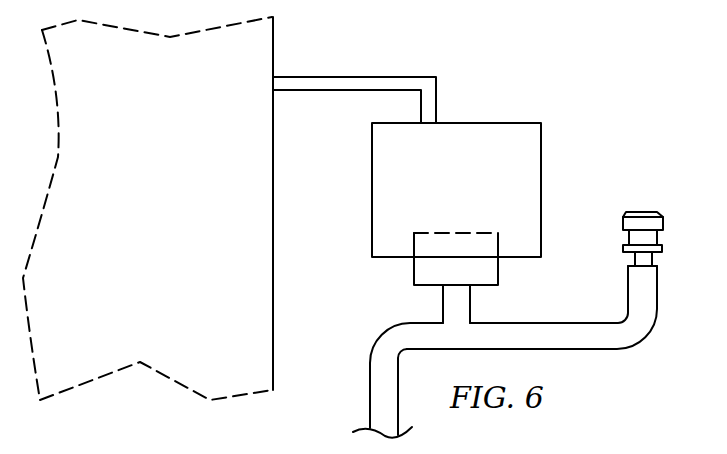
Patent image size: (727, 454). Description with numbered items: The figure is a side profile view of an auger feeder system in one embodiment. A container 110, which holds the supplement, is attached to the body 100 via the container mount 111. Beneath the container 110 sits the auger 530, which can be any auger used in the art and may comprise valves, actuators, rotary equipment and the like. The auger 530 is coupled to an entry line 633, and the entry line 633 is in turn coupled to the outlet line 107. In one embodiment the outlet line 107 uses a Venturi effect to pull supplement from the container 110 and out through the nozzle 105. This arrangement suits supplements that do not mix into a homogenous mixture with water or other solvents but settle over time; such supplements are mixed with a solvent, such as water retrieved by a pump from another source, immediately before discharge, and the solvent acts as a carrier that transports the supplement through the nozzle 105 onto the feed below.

The body 100 is at (190, 194).
The container mount 111 is at (362, 76).
The container 110 is at (475, 181).
The auger 530 is at (500, 278).
The entry line 633 is at (471, 305).
The outlet line 107 is at (372, 409).
The nozzle 105 is at (638, 211).